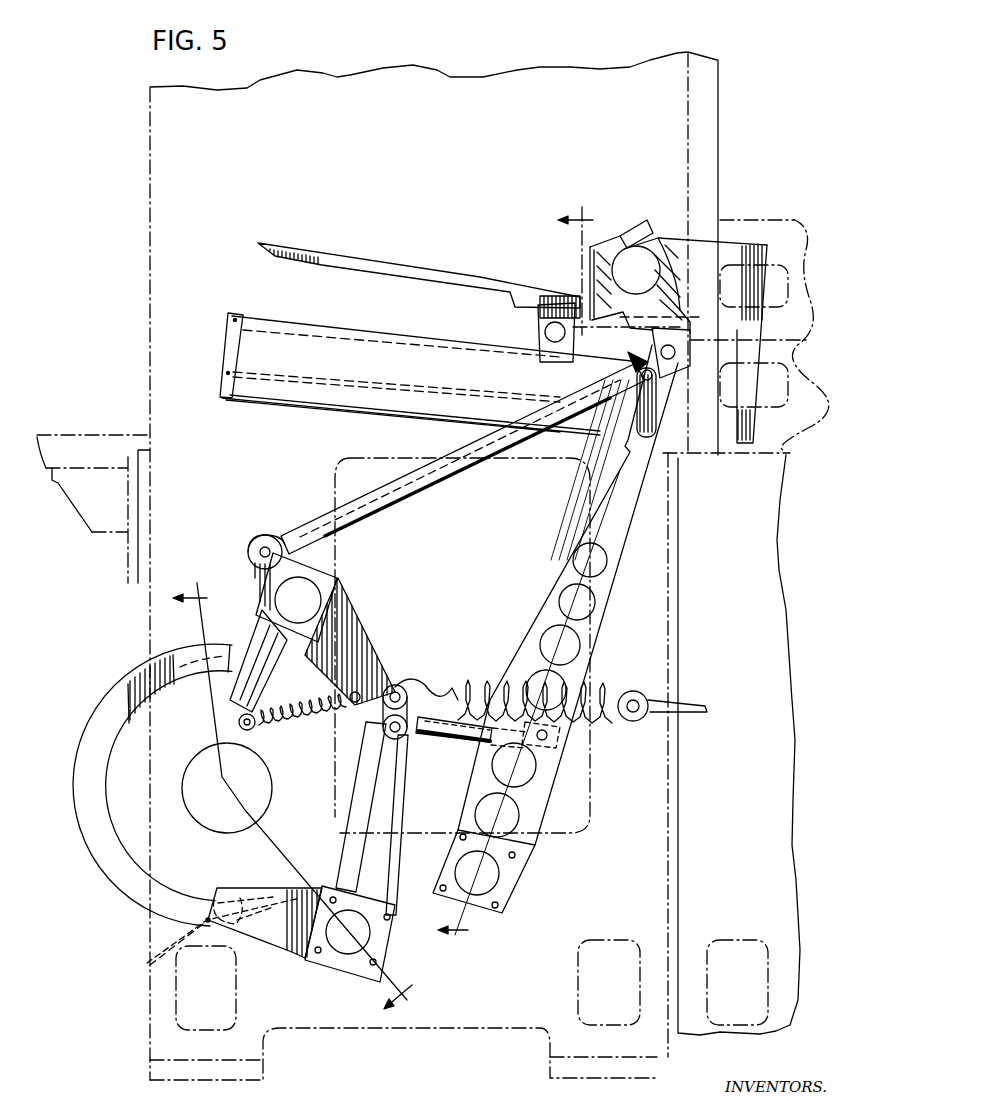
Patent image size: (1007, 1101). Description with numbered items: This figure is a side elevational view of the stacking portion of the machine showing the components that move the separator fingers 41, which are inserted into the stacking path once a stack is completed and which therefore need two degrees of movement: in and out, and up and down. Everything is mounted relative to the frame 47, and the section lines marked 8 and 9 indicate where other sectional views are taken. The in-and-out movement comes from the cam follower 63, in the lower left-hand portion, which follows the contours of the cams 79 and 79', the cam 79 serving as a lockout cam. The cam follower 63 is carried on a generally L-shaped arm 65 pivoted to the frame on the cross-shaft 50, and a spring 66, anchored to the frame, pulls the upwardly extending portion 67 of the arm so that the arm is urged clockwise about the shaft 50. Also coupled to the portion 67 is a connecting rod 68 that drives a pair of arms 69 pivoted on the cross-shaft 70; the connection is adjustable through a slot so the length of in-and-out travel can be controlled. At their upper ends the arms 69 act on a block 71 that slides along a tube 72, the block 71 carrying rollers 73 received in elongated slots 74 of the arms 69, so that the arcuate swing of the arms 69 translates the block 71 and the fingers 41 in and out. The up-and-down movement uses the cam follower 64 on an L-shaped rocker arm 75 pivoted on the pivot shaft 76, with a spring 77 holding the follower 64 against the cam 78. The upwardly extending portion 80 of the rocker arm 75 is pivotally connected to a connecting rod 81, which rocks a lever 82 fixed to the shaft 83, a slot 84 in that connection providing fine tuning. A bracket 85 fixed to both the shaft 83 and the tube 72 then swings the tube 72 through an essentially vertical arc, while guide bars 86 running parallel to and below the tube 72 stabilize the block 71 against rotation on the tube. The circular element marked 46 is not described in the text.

The separator fingers 41 is at (375, 262).
The shaft 46 is at (227, 788).
The frame 47 is at (414, 161).
The cross-shaft 50 is at (365, 937).
The cam follower 63 is at (150, 965).
The cam follower 64 is at (377, 672).
The L-shaped arm 65 is at (287, 948).
The spring 66 is at (600, 683).
The upwardly extending portion 67 is at (383, 812).
The connecting rod 68 is at (460, 745).
The arms 69 is at (620, 538).
The cross-shaft 70 is at (497, 873).
The block 71 is at (540, 362).
The tube 72 is at (338, 340).
The rollers 73 is at (685, 372).
The elongated slots 74 is at (603, 428).
The L-shaped rocker arm 75 is at (350, 638).
The pivot shaft 76 is at (305, 600).
The spring 77 is at (310, 712).
The cam 78 is at (97, 737).
The cam 79 is at (169, 786).
The cam 79' is at (186, 658).
The upwardly extending portion 80 is at (255, 568).
The connecting rod 81 is at (360, 500).
The lever 82 is at (663, 273).
The shaft 83 is at (640, 262).
The slot 84 is at (798, 337).
The bracket 85 is at (743, 242).
The guide bars 86 is at (267, 398).
The section line 8- 8 is at (529, 570).
The section line 9- 9 is at (292, 798).